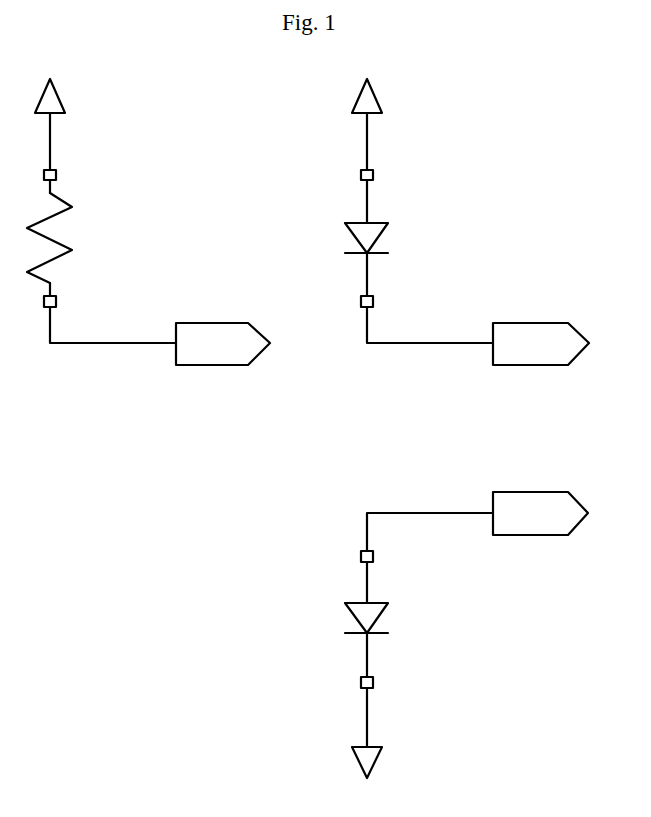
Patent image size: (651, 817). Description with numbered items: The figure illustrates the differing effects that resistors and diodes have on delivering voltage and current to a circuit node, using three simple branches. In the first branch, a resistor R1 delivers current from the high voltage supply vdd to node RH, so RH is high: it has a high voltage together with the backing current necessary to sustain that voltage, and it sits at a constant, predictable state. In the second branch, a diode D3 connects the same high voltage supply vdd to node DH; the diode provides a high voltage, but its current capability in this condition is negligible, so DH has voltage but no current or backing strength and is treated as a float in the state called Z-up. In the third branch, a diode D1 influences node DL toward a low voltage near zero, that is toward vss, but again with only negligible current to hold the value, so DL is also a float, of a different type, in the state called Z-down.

The resistor R1 is at (82, 238).
The diode D3 is at (394, 221).
The diode D1 is at (395, 601).
The high voltage supply vdd is at (240, 121).
The low voltage supply vss is at (394, 737).
The node RH is at (223, 345).
The node DH is at (541, 345).
The node DL is at (540, 514).